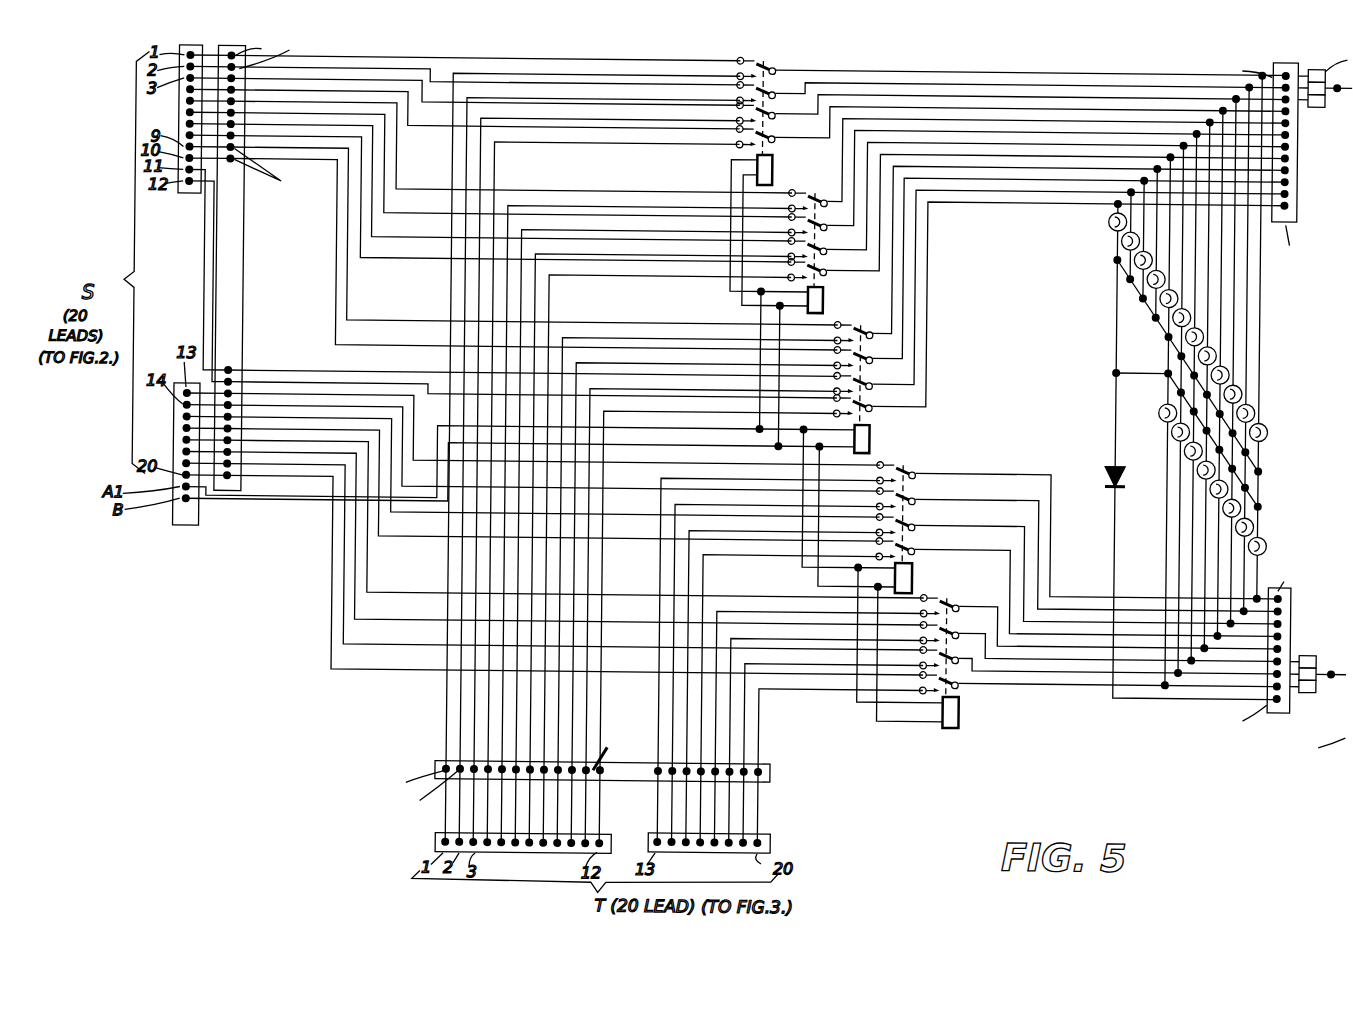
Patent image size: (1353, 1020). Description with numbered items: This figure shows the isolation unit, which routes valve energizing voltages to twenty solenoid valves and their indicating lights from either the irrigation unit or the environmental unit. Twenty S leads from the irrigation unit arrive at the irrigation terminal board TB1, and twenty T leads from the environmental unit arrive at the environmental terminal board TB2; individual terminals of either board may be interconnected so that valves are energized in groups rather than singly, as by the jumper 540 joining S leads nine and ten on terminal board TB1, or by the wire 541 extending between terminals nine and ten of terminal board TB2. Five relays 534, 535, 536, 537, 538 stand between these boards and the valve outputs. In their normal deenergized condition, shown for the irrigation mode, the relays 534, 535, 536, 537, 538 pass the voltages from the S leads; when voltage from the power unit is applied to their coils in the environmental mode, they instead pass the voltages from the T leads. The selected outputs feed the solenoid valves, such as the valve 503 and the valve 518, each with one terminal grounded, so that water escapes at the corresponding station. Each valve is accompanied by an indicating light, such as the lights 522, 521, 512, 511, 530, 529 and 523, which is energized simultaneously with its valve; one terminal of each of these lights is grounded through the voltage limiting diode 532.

The solenoid valve 503 is at (1322, 96).
The indicating light 511 is at (1272, 419).
The indicating light 512 is at (1258, 398).
The solenoid valve 518 is at (1326, 628).
The indicating light 521 is at (1124, 231).
The indicating light 522 is at (1111, 214).
The indicating light 523 is at (1269, 526).
The indicating light 529 is at (1176, 423).
The indicating light 530 is at (1165, 396).
The voltage limiting diode 532 is at (1110, 456).
The relay 534 is at (776, 160).
The relay 535 is at (827, 286).
The relay 536 is at (876, 424).
The relay 537 is at (920, 566).
The relay 538 is at (968, 706).
The jumper 540 is at (267, 171).
The wire 541 is at (615, 741).
The irrigation terminal board TB1 is at (248, 222).
The environmental terminal board TB2 is at (778, 766).